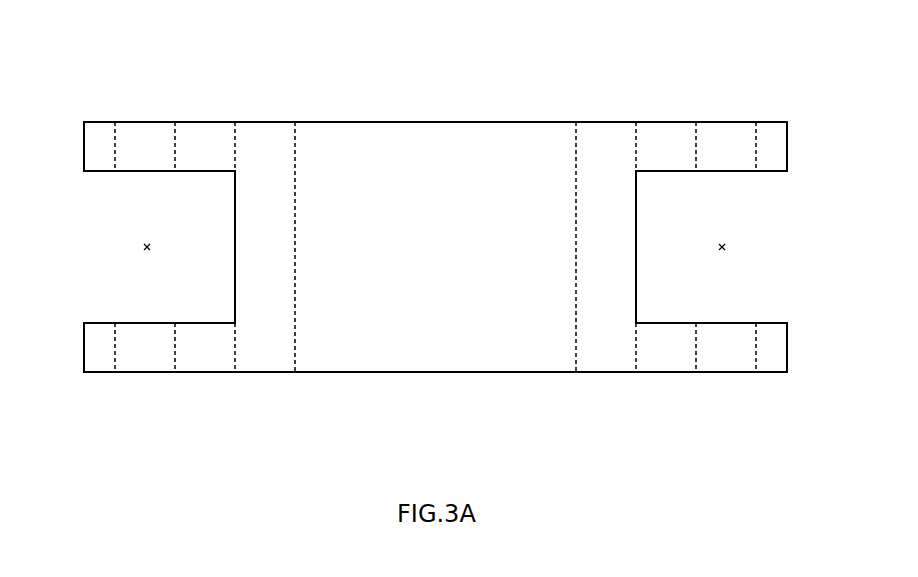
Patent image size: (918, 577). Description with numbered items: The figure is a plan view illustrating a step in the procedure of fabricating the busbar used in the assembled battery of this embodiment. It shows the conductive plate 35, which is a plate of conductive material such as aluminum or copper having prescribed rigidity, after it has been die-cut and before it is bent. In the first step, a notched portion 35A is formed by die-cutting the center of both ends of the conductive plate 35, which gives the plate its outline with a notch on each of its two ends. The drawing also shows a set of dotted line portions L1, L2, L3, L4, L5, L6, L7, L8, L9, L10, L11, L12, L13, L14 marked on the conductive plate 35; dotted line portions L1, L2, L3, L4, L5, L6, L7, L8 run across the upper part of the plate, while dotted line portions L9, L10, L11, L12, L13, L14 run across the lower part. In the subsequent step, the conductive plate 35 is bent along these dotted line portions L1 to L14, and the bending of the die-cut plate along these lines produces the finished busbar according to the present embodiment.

The conductive plate 35 is at (86, 66).
The notched portion 35A is at (146, 247).
The dotted line portion L1 is at (116, 129).
The dotted line portion L2 is at (176, 129).
The dotted line portion L3 is at (236, 129).
The dotted line portion L4 is at (296, 129).
The dotted line portion L5 is at (575, 129).
The dotted line portion L6 is at (635, 129).
The dotted line portion L7 is at (695, 129).
The dotted line portion L8 is at (755, 129).
The dotted line portion L9 is at (116, 365).
The dotted line portion L10 is at (176, 365).
The dotted line portion L11 is at (236, 365).
The dotted line portion L12 is at (636, 365).
The dotted line portion L13 is at (696, 365).
The dotted line portion L14 is at (756, 365).